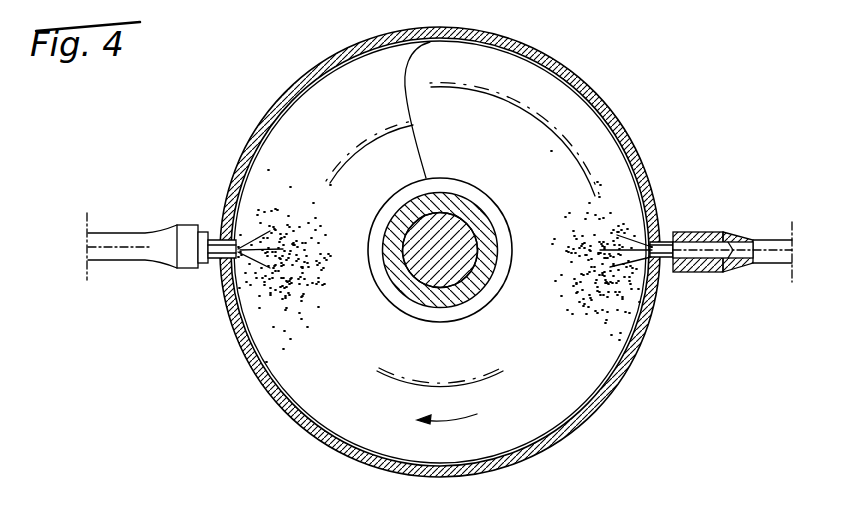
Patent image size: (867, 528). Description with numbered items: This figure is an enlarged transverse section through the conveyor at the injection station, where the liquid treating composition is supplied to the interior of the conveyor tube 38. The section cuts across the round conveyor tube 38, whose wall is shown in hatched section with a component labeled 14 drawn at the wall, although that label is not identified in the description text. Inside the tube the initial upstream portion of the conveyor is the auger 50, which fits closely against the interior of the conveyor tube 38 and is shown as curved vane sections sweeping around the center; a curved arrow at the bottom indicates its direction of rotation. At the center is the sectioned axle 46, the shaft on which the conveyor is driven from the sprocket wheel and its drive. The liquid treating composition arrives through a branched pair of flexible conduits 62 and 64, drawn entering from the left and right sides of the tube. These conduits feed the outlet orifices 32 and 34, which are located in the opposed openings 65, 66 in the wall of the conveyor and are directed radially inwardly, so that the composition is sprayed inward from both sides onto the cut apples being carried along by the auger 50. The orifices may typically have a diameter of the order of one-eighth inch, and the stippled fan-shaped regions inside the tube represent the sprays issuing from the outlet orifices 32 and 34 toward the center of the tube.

The drum housing wall 14 is at (313, 70).
The conveyor tube 38 is at (262, 115).
The auger 50 is at (580, 117).
The axle 46 is at (460, 235).
The outlet orifice 32 is at (212, 268).
The flexible conduit 62 is at (123, 263).
The opening 65 is at (248, 226).
The outlet orifice 34 is at (668, 232).
The flexible conduit 64 is at (770, 267).
The opening 66 is at (648, 255).